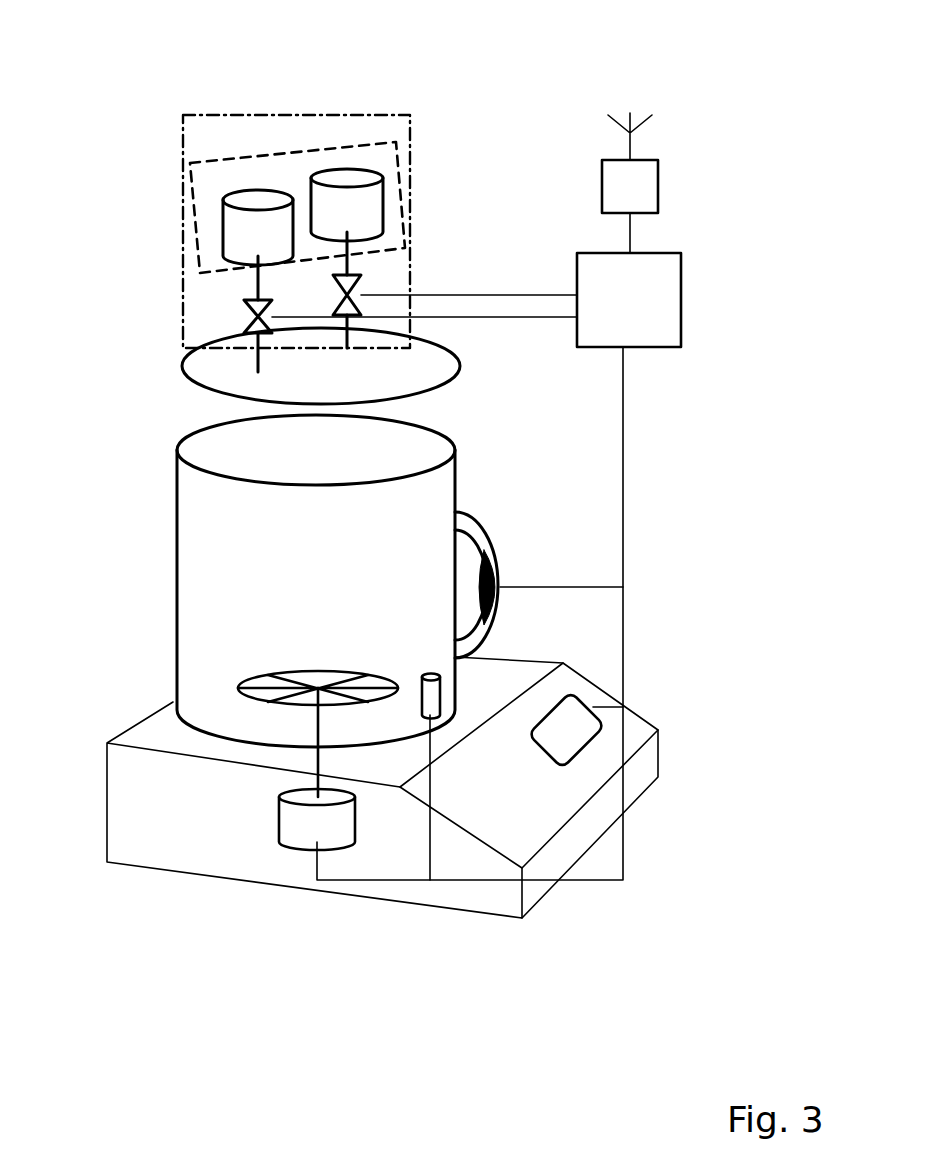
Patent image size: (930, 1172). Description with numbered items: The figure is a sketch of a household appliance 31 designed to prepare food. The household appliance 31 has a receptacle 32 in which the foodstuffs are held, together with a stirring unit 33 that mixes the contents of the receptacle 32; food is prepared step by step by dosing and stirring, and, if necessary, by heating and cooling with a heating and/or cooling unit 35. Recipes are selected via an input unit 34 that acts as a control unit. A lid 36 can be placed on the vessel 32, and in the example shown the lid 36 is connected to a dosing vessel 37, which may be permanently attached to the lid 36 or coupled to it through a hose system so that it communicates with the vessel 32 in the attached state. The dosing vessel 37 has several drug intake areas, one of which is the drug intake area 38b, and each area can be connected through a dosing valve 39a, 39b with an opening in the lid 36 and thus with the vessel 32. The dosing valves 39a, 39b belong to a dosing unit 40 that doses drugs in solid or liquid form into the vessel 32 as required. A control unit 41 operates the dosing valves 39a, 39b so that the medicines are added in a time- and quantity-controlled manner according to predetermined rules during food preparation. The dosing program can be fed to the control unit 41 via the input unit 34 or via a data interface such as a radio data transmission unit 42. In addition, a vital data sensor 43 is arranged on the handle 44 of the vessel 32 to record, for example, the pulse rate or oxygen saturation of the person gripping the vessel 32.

The household appliance 31 is at (90, 83).
The receptacle 32 is at (177, 600).
The stirring unit 33 is at (300, 846).
The input unit 34 is at (587, 700).
The heating and/or cooling unit 35 is at (442, 696).
The lid 36 is at (182, 366).
The dosing vessel 37 is at (190, 227).
The drug intake area 38b is at (382, 203).
The dosing valve 39a is at (243, 310).
The dosing valve 39b is at (357, 291).
The dosing unit 40 is at (313, 115).
The control unit 41 is at (681, 300).
The radio data transmission unit 42 is at (658, 193).
The vital data sensor 43 is at (498, 568).
The handle 44 is at (476, 520).